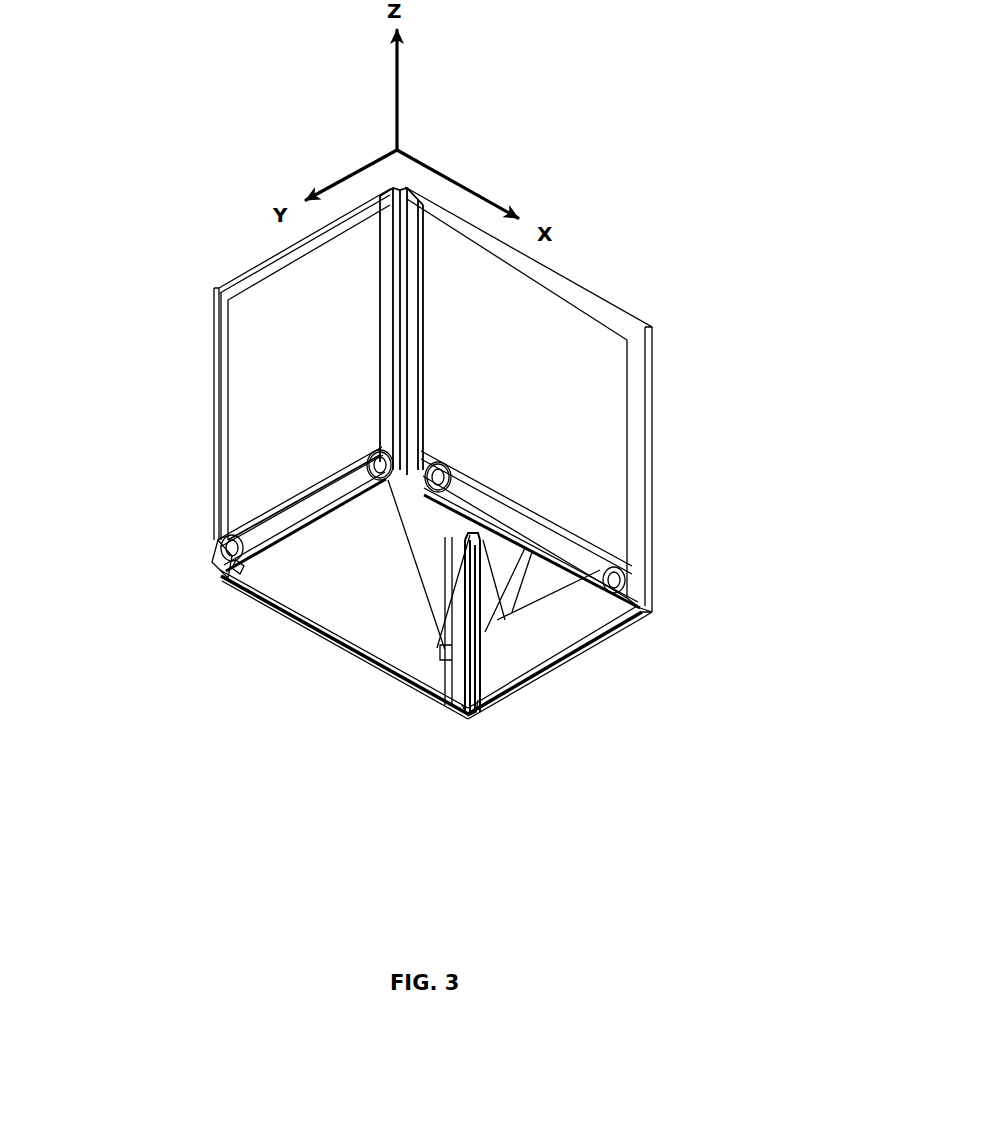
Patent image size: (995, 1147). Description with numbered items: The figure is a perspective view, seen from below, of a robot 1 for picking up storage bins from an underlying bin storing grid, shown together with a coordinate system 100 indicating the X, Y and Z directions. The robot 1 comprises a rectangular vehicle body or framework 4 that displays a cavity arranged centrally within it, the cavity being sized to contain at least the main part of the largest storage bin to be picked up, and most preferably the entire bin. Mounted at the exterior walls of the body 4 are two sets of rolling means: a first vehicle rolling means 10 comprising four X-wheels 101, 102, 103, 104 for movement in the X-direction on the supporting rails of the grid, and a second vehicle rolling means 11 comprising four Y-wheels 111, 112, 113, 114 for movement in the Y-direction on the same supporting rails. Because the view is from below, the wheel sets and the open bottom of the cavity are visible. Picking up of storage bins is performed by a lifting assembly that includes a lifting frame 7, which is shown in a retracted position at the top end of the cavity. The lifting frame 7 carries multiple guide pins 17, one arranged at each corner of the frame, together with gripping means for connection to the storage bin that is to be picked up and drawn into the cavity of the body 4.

The coordinate system / container assembly 100 is at (318, 112).
The robot 1 is at (600, 150).
The vehicle body 4 is at (308, 320).
The second vehicle rolling means 11 is at (355, 442).
The first vehicle rolling means 10 is at (603, 558).
The X-wheel 102 is at (438, 475).
The hinge 111 is at (381, 478).
The corner connector 112 is at (238, 568).
The corner connector 113 is at (648, 620).
The corner connector 114 is at (484, 718).
The X-wheel 101 is at (618, 580).
The X-wheel 103 is at (437, 700).
The X-wheel 104 is at (246, 596).
The lifting frame 7 is at (483, 540).
The guide pin 17 is at (445, 650).